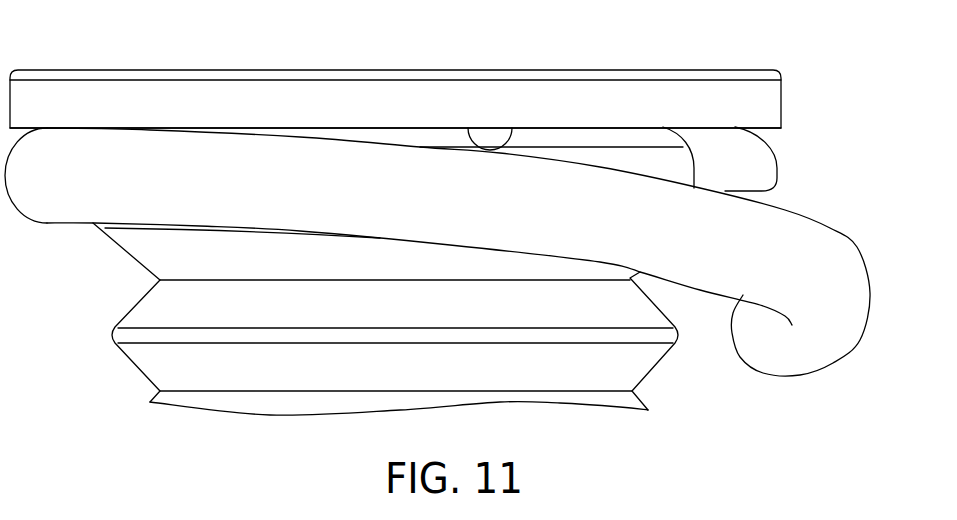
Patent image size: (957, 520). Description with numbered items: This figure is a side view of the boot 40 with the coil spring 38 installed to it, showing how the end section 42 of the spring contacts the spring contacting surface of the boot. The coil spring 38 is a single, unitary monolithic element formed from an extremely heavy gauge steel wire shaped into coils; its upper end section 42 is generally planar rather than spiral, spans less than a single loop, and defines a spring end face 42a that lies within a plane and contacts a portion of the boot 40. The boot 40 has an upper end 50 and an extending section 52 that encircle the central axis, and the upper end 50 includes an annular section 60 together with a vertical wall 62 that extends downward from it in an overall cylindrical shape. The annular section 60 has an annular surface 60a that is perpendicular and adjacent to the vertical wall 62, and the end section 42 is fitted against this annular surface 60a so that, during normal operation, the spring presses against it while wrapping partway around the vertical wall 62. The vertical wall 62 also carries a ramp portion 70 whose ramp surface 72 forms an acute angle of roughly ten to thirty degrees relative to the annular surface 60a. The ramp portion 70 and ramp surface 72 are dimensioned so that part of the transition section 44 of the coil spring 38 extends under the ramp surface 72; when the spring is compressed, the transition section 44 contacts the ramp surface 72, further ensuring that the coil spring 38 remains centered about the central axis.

The coil spring 38 is at (855, 246).
The boot 40 is at (310, 70).
The end section 42 is at (47, 188).
The spring end face 42a is at (67, 128).
The transition section 44 is at (815, 335).
The upper end 50 is at (695, 70).
The extending section 52 is at (138, 372).
The annular section 60 is at (753, 102).
The annular surface 60a is at (512, 128).
The vertical wall 62 is at (623, 160).
The ramp portion 70 is at (768, 136).
The ramp surface 72 is at (745, 170).